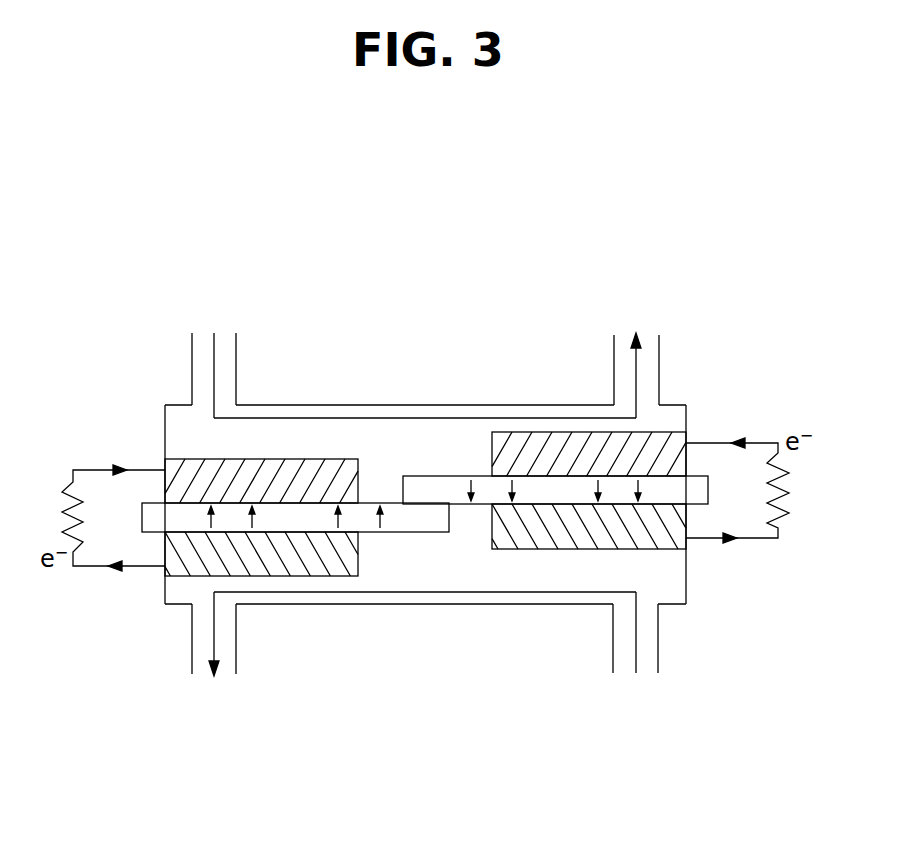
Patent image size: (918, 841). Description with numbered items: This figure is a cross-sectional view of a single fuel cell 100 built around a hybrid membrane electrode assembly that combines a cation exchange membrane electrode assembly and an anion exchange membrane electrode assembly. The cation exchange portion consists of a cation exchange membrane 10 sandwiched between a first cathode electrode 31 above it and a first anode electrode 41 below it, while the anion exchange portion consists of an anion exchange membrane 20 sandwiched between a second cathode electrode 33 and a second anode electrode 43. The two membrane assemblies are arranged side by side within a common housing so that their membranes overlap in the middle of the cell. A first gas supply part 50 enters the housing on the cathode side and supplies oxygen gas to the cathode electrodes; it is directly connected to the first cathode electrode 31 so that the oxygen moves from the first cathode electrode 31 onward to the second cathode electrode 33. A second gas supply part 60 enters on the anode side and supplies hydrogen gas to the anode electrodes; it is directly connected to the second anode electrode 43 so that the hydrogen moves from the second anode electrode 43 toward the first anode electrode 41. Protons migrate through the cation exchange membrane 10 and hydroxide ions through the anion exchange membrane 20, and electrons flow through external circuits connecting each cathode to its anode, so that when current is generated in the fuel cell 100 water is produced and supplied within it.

The fuel cell 100 is at (596, 234).
The cation exchange membrane 10 is at (142, 519).
The anion exchange membrane 20 is at (706, 492).
The first cathode electrode 31 is at (175, 463).
The second cathode electrode 33 is at (687, 437).
The first anode electrode 41 is at (163, 574).
The second anode electrode 43 is at (682, 542).
The first gas supply part 50 is at (205, 351).
The second gas supply part 60 is at (650, 652).